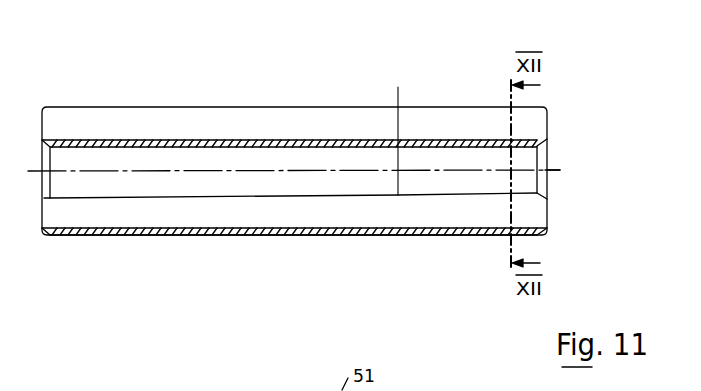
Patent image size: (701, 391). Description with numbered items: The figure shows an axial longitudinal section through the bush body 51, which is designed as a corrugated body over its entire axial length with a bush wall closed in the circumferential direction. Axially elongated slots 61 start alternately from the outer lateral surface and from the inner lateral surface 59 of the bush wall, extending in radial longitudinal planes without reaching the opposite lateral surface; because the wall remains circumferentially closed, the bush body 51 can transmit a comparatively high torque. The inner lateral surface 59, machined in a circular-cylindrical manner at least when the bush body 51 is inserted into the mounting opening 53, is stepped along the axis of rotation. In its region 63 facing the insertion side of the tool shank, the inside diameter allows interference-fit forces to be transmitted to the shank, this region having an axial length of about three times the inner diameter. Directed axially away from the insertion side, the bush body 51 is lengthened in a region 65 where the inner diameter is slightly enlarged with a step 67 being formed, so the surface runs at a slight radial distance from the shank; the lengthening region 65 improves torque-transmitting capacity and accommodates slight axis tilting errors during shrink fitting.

The bush body 51 is at (285, 97).
The mounting opening 53 is at (458, 195).
The inner lateral surface 59 is at (213, 201).
The axially elongated slots 61 is at (522, 122).
The region facing the insertion side 63 is at (460, 152).
The lengthening region 65 is at (208, 159).
The step 67 is at (398, 196).